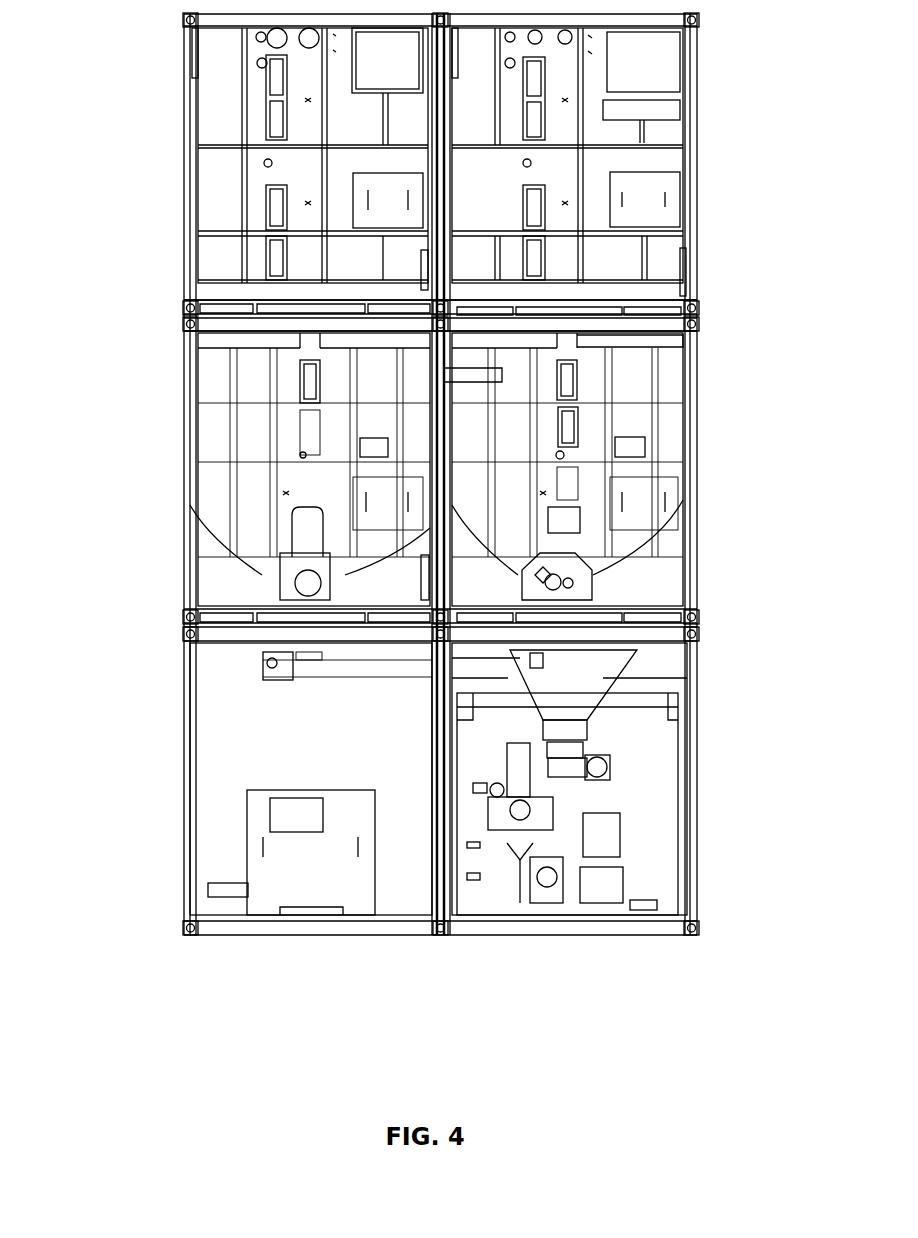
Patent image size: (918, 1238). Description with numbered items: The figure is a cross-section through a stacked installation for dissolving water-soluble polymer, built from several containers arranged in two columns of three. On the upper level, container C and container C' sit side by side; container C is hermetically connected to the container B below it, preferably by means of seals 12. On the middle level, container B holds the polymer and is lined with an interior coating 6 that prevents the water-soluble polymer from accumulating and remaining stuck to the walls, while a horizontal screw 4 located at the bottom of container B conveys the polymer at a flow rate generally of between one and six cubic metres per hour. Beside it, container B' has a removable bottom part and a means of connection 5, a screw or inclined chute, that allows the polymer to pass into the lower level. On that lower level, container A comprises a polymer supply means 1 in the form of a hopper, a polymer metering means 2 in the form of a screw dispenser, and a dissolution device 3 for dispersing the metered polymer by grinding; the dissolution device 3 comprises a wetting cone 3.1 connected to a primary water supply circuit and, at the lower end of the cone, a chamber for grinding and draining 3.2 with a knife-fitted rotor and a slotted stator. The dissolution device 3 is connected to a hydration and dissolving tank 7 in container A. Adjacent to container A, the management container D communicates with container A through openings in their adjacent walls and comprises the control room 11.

The polymer supply means 1 is at (577, 675).
The polymer metering means 2 is at (567, 766).
The polymer dissolution device 3 is at (547, 817).
The wetting cone 3.1 is at (520, 843).
The chamber for grinding and draining 3.2 is at (522, 860).
The horizontal screw 4 is at (597, 574).
The means of connection 5 is at (297, 676).
The interior coating 6 is at (185, 530).
The hydration and dissolving tank 7 is at (677, 757).
The control room 11 is at (248, 850).
The seals 12 is at (697, 320).
The container A is at (683, 880).
The container B is at (620, 469).
The container B' is at (262, 469).
The container C is at (623, 162).
The container C' is at (237, 159).
The management container D is at (183, 877).